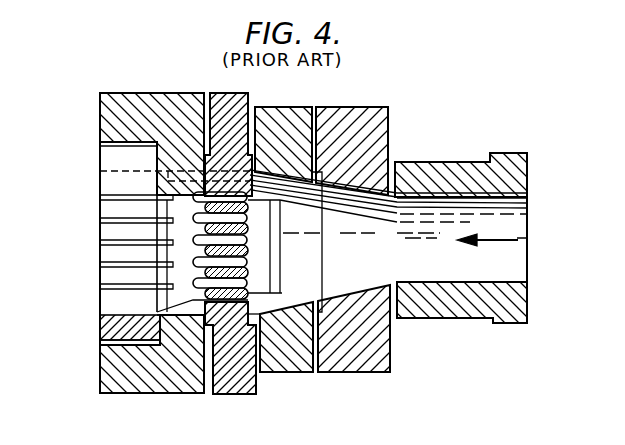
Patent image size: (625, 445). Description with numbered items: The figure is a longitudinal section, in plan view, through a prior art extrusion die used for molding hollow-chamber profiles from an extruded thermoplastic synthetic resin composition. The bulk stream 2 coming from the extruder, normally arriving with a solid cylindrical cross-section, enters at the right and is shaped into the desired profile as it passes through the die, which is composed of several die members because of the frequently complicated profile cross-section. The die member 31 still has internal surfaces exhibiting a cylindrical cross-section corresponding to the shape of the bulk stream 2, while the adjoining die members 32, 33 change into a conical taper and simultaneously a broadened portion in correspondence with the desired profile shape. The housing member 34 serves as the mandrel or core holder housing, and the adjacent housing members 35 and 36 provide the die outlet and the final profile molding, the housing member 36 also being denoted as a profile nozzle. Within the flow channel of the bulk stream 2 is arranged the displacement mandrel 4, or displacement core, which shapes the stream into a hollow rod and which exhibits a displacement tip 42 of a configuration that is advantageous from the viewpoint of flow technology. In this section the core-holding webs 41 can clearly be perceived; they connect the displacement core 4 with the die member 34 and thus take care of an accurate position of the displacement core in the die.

The bulk stream 2 is at (500, 240).
The displacement mandrel 4 is at (112, 232).
The die member 31 is at (427, 310).
The die member 32 is at (352, 363).
The die member 33 is at (286, 370).
The housing member 34 is at (232, 382).
The housing member 35 is at (184, 377).
The profile nozzle 36 is at (122, 330).
The core-holding web 41 is at (238, 278).
The displacement tip 42 is at (278, 222).